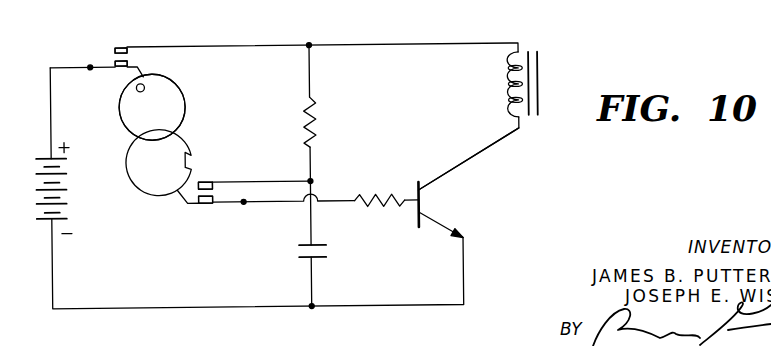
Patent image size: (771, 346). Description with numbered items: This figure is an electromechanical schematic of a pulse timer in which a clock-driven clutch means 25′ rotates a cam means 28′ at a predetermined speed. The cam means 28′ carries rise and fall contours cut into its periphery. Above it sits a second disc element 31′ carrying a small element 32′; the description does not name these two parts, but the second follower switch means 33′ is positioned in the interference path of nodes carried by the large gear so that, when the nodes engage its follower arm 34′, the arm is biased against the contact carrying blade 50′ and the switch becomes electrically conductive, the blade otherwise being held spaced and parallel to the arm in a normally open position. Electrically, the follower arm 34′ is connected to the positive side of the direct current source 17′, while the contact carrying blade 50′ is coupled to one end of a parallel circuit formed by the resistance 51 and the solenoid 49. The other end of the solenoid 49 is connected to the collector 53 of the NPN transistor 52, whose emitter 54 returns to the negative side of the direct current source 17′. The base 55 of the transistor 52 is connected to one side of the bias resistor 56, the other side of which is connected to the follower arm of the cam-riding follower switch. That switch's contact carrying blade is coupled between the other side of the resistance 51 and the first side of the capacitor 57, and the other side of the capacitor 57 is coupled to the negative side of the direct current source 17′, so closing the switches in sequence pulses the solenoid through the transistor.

The direct current source 17′ is at (65, 186).
The clutch means 25′ is at (188, 124).
The cam means 28′ is at (163, 172).
The cam disc 31′ is at (160, 119).
The pin 32′ is at (136, 91).
The second follower switch means 33′ is at (146, 59).
The follower arm means 34′ is at (102, 68).
The contact carrying blade 50′ is at (127, 48).
The solenoid 49 is at (540, 87).
The resistance 51 is at (315, 119).
The NPN transistor 52 is at (453, 184).
The collector 53 is at (436, 185).
The emitter 54 is at (471, 205).
The base 55 is at (411, 206).
The bias resistor 56 is at (367, 197).
The capacitor 57 is at (324, 256).